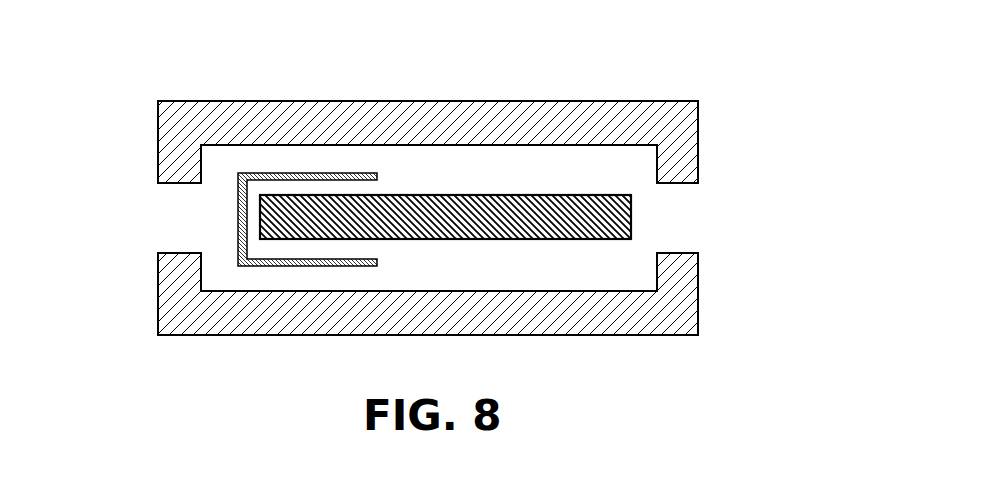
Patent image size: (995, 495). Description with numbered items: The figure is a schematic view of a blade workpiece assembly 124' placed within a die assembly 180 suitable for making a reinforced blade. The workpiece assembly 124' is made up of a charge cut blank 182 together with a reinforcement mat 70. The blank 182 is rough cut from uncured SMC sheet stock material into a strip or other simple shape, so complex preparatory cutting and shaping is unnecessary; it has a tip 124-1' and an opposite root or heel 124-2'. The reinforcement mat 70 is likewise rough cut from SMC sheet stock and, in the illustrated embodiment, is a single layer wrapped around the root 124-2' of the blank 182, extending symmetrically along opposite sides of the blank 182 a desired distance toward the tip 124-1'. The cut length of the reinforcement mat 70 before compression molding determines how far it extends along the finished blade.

The reinforcement mat 70 is at (297, 173).
The die assembly 180 is at (617, 116).
The charge cut blank 182 is at (462, 195).
The blade workpiece assembly 124' is at (448, 155).
The tip 124-1' is at (555, 160).
The root 124-2' is at (212, 147).